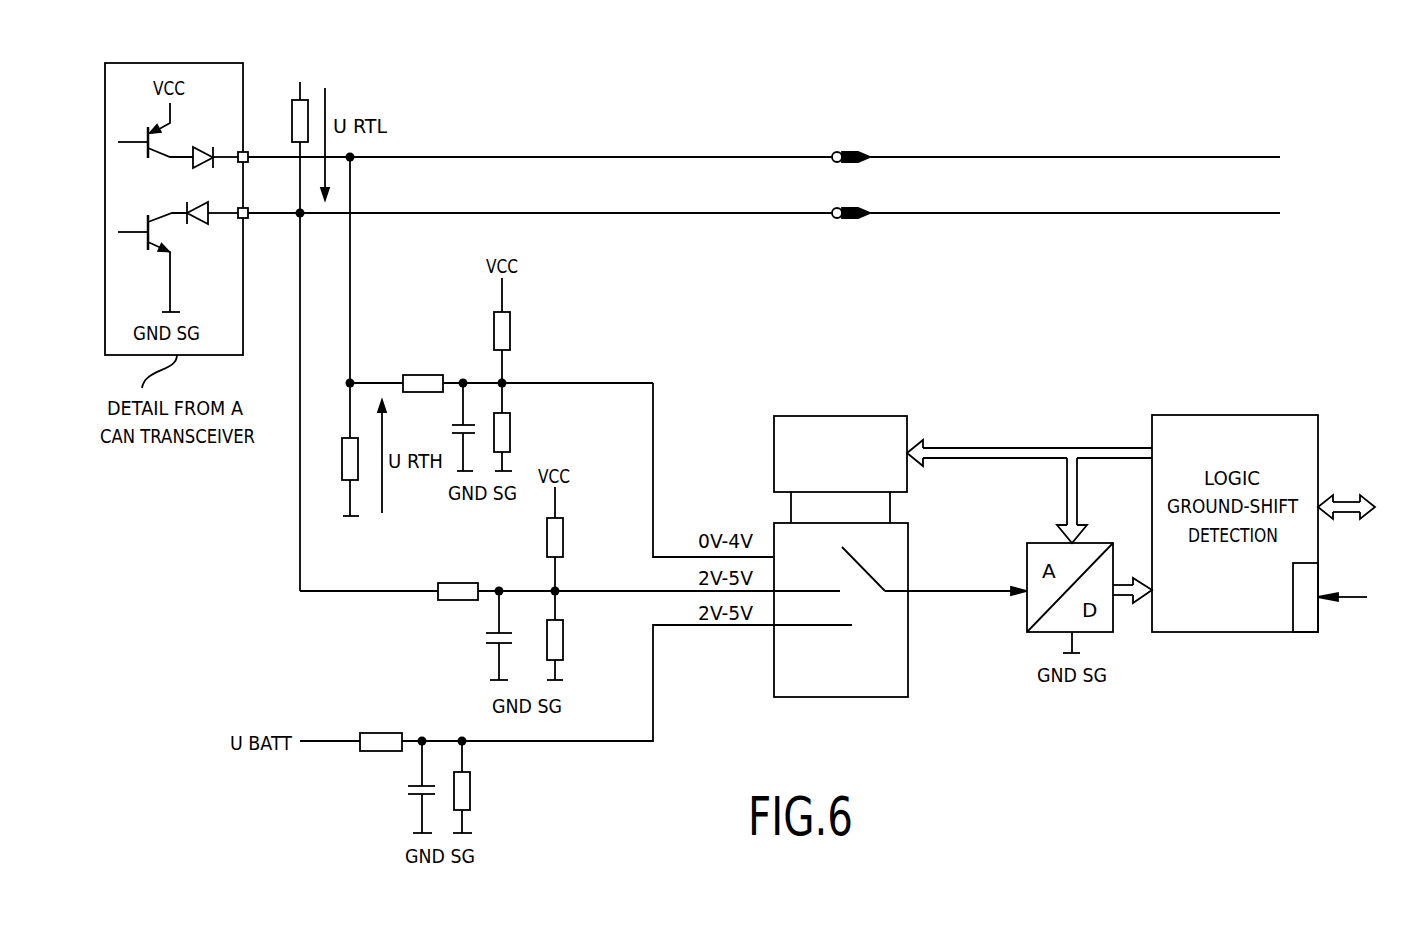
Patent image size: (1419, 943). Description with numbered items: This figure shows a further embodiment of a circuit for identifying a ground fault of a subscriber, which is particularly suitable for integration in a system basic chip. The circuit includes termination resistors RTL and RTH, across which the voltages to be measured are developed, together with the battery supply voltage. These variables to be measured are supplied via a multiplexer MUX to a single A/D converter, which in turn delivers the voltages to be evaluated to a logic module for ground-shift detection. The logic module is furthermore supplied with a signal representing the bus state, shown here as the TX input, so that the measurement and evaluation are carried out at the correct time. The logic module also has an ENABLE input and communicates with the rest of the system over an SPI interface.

The termination resistor RTL is at (281, 135).
The termination resistor RTH is at (349, 465).
The multiplexer MUX is at (841, 556).
The enable input ENABLE is at (1307, 622).
The SPI interface SPI is at (1362, 508).
The TX input TX is at (1354, 598).